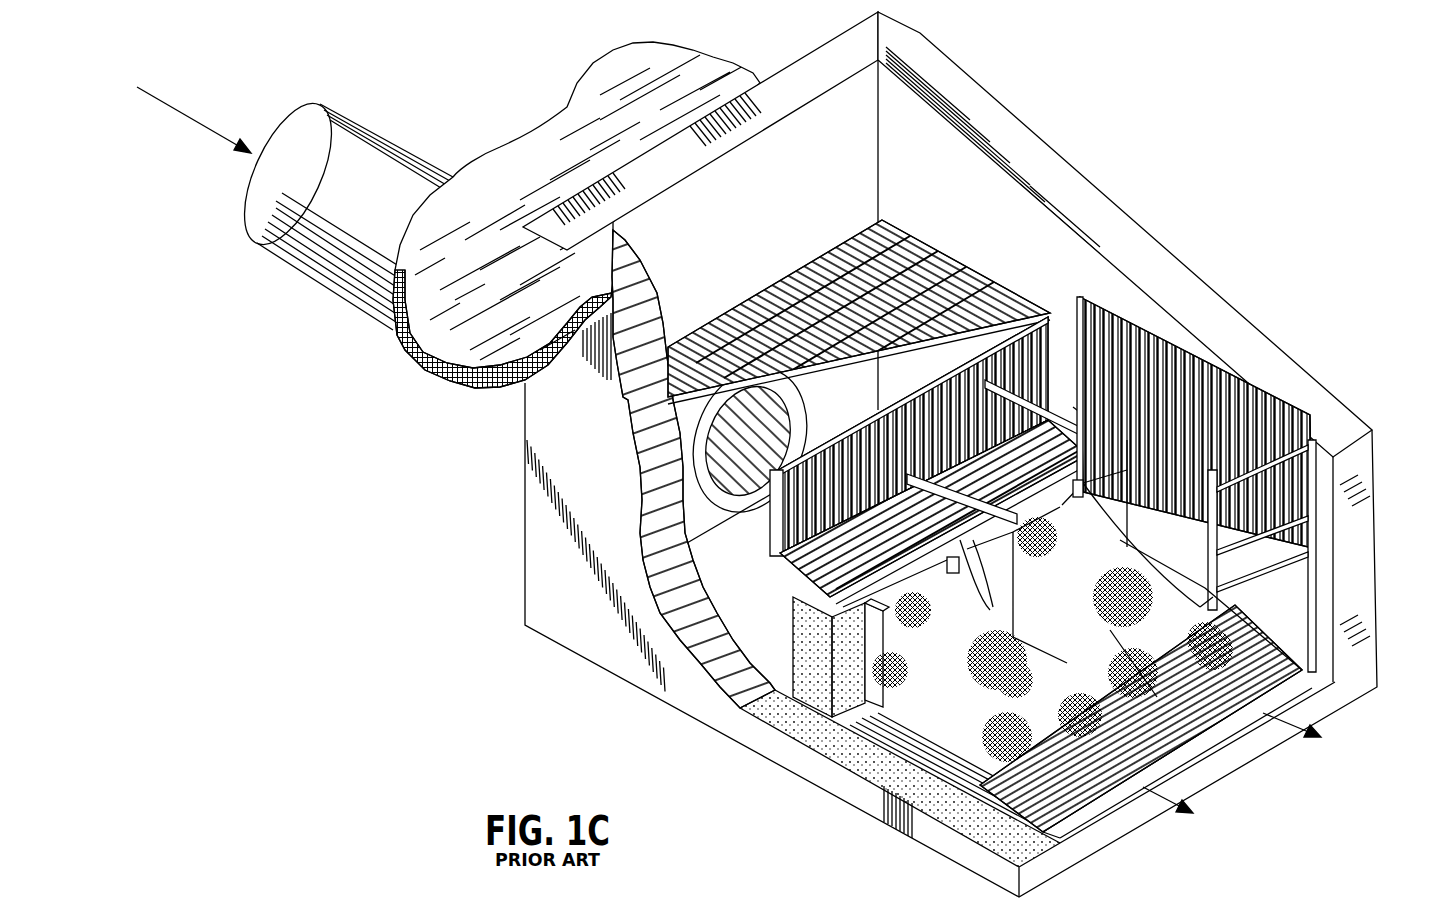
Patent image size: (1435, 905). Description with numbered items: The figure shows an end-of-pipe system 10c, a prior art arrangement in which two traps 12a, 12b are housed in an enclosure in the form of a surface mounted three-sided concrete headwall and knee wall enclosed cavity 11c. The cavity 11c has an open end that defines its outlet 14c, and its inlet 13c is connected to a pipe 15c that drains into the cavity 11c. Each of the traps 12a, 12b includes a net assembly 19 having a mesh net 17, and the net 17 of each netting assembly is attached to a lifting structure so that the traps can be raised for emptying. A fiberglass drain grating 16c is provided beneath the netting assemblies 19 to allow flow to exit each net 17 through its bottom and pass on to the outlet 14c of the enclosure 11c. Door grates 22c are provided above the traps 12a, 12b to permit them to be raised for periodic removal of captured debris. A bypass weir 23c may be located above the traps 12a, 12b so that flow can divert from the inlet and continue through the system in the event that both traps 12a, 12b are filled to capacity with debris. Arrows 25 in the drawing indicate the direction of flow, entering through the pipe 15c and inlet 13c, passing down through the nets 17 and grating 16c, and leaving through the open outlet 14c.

The end-of-pipe system 10c is at (1261, 108).
The enclosed cavity 11c is at (1047, 150).
The trap 12a is at (1073, 668).
The trap 12b is at (1165, 594).
The inlet 13c is at (778, 400).
The outlet 14c is at (1302, 643).
The pipe 15c is at (324, 179).
The fiberglass drain grating 16c is at (1253, 648).
The mesh net 17 is at (1094, 577).
The net assembly 19 is at (1110, 575).
The door grates 22c is at (1215, 363).
The bypass weir 23c is at (1052, 338).
The flow direction arrow 25 is at (184, 110).